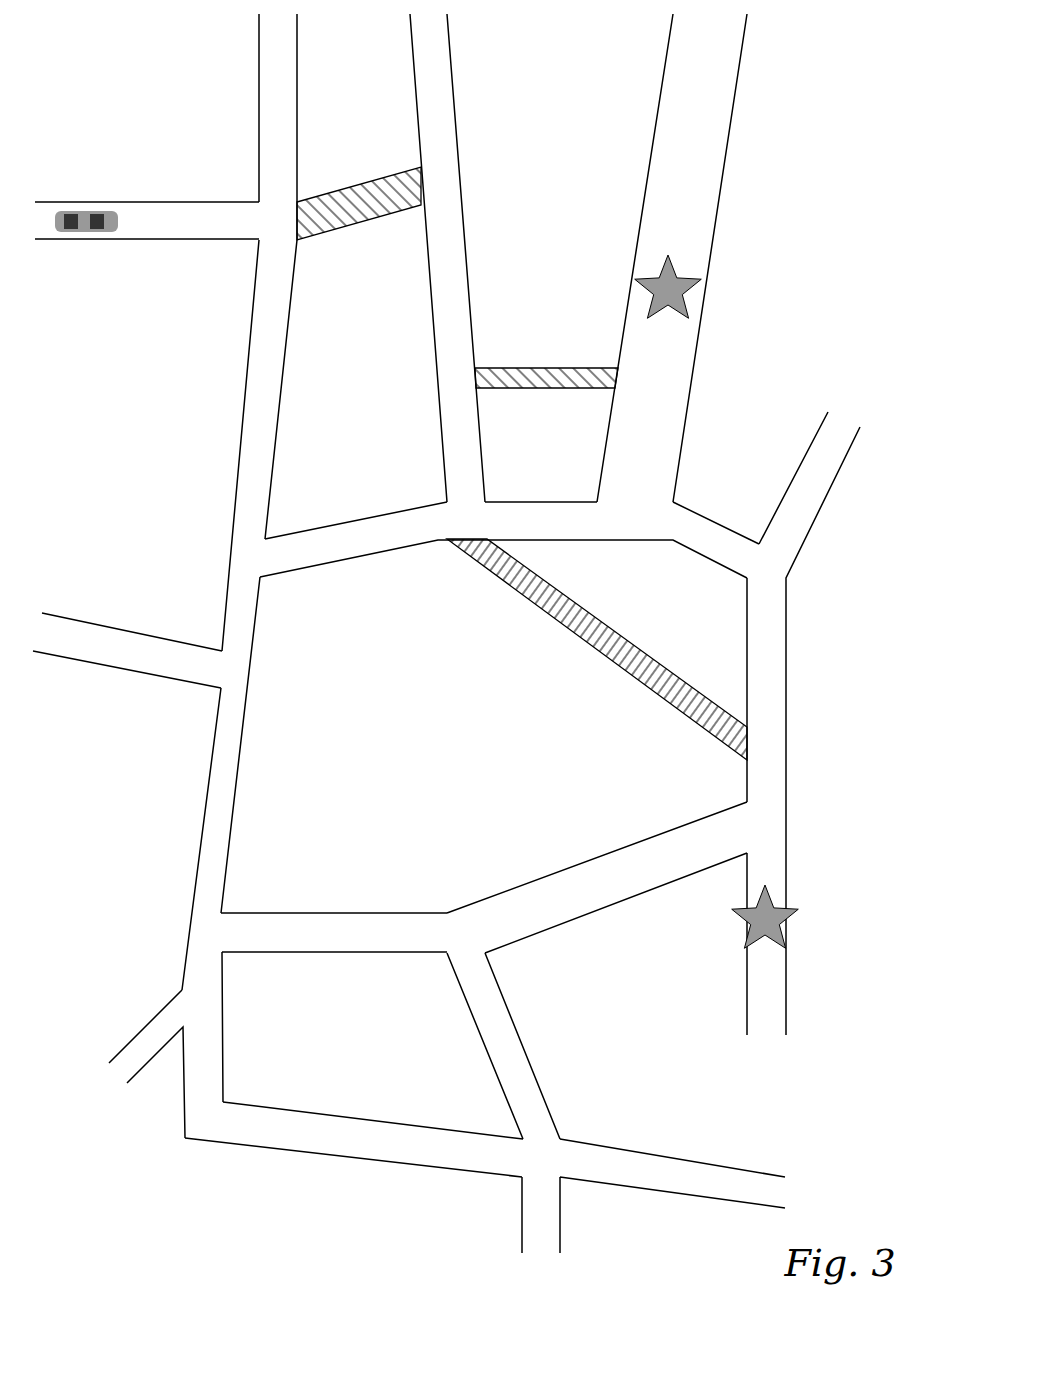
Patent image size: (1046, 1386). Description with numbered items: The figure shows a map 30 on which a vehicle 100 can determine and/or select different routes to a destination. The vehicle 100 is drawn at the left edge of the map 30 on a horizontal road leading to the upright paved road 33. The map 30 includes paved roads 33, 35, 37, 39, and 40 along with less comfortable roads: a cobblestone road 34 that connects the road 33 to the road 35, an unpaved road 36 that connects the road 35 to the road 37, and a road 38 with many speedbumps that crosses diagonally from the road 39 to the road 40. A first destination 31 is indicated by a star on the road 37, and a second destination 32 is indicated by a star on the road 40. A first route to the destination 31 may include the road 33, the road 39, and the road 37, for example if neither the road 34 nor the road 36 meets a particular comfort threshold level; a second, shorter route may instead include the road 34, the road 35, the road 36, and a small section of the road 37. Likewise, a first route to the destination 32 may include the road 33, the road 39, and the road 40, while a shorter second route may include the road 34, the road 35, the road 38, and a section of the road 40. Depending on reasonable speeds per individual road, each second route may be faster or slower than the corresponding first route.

The map 30 is at (203, 1197).
The first destination 31 is at (685, 297).
The second destination 32 is at (790, 913).
The paved road 33 is at (267, 310).
The cobblestone road 34 is at (338, 227).
The paved road 35 is at (441, 260).
The unpaved road 36 is at (502, 383).
The paved road 37 is at (660, 403).
The road with many speedbumps 38 is at (545, 598).
The paved road 39 is at (542, 527).
The paved road 40 is at (768, 633).
The vehicle 100 is at (82, 233).